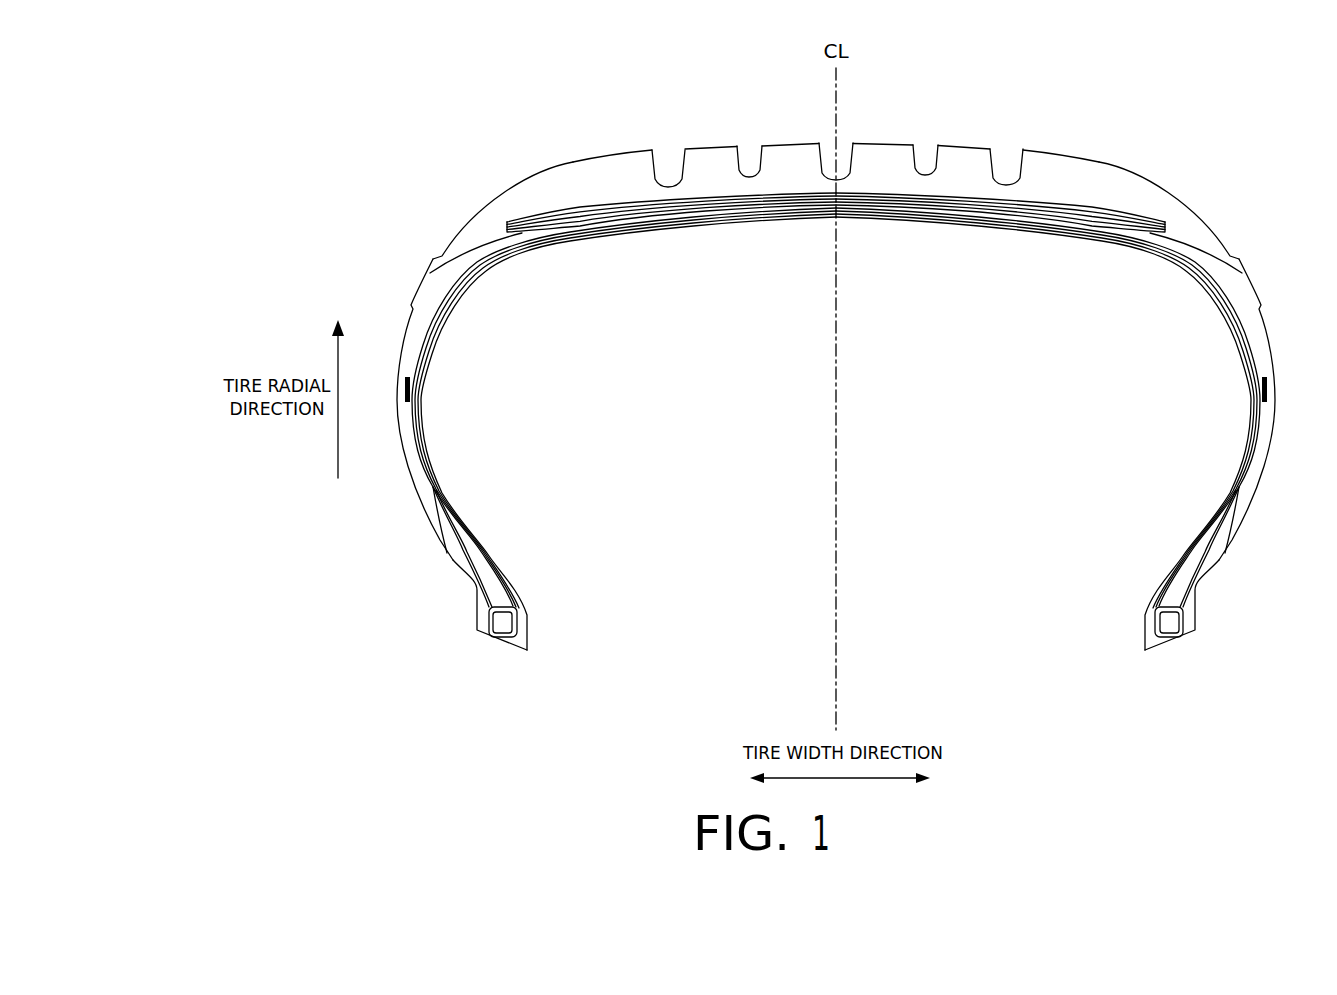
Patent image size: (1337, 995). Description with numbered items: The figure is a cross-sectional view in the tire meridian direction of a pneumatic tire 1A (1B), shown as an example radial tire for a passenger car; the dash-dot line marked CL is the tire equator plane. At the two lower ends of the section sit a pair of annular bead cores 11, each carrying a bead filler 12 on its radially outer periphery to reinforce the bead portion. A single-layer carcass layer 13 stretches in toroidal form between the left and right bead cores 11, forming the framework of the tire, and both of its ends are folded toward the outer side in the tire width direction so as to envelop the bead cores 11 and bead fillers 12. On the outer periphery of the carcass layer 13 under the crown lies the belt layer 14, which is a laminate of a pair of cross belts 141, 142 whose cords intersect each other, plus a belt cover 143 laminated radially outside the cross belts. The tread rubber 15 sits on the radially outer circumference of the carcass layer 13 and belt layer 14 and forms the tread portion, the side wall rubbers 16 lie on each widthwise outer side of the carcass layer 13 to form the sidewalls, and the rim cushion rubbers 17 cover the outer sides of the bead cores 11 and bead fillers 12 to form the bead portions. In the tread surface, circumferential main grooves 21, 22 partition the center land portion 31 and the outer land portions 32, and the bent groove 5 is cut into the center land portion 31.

The pneumatic tire 1A is at (1103, 110).
The pneumatic tire 1B is at (817, 390).
The bent groove 5 is at (746, 153).
The circumferential main groove 21 is at (843, 153).
The circumferential main groove 22 is at (667, 157).
The center land portion 31 is at (714, 145).
The land portion 32 is at (573, 162).
The bead core 11 is at (503, 640).
The bead filler 12 is at (500, 573).
The carcass layer 13 is at (1183, 255).
The belt layer 14 is at (1130, 297).
The cross belt 141 is at (1120, 226).
The cross belt 142 is at (1075, 213).
The belt cover 143 is at (1030, 207).
The tread rubber 15 is at (1190, 222).
The side wall rubber 16 is at (413, 328).
The rim cushion rubber 17 is at (458, 565).